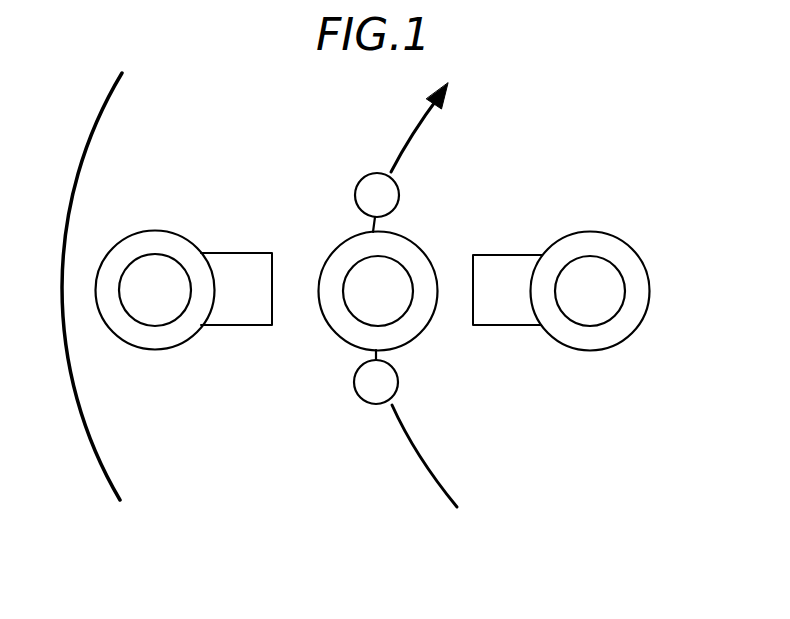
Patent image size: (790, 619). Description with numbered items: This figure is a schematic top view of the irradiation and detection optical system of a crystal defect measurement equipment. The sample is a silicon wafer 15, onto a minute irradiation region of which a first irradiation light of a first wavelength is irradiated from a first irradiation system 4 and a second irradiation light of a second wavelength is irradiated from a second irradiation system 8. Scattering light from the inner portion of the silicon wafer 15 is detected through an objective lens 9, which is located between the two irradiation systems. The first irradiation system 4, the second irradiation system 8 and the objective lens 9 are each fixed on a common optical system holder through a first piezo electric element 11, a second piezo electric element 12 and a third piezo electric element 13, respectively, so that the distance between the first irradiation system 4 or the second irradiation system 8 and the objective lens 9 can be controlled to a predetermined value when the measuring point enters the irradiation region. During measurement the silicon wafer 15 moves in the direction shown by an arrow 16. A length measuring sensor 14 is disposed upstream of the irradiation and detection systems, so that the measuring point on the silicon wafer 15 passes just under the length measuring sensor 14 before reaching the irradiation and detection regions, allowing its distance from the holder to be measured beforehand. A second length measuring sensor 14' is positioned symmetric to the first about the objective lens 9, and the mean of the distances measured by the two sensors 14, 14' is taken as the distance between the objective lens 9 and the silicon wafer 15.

The first irradiation system 4 is at (152, 292).
The second irradiation system 8 is at (590, 292).
The objective lens 9 is at (373, 290).
The first piezo electric element 11 is at (122, 342).
The second piezo electric element 12 is at (618, 342).
The third piezo electric element 13 is at (332, 327).
The length measuring sensor 14 is at (417, 428).
The second length measuring sensor 14' is at (420, 202).
The silicon wafer 15 is at (95, 450).
The arrow 16 is at (412, 140).